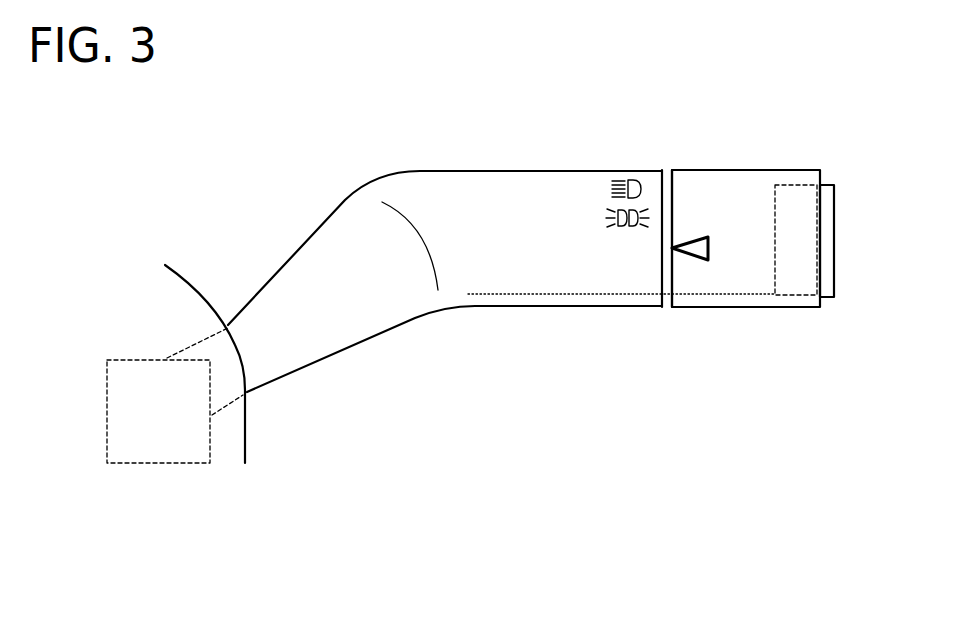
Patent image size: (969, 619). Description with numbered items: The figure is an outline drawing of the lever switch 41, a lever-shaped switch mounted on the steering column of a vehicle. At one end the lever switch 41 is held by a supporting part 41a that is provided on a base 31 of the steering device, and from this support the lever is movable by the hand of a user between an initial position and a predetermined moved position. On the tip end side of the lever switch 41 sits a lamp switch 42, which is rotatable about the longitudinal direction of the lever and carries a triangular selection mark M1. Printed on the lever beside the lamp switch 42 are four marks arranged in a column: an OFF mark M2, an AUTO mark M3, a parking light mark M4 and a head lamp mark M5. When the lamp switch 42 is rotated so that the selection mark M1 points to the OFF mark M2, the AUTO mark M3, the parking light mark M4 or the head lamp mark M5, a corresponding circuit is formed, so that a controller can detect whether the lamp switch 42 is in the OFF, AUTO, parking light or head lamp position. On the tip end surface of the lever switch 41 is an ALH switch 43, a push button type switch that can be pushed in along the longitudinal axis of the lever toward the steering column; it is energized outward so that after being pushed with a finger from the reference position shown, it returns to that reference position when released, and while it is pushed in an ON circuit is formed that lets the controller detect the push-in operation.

The lever switch 41 is at (722, 107).
The supporting part 41a is at (178, 463).
The lamp switch 42 is at (758, 170).
The ALH switch 43 is at (837, 232).
The base 31 is at (247, 435).
The selection mark M1 is at (702, 260).
The OFF mark M2 is at (607, 275).
The AUTO mark M3 is at (592, 252).
The parking light mark M4 is at (595, 220).
The head lamp mark M5 is at (603, 195).